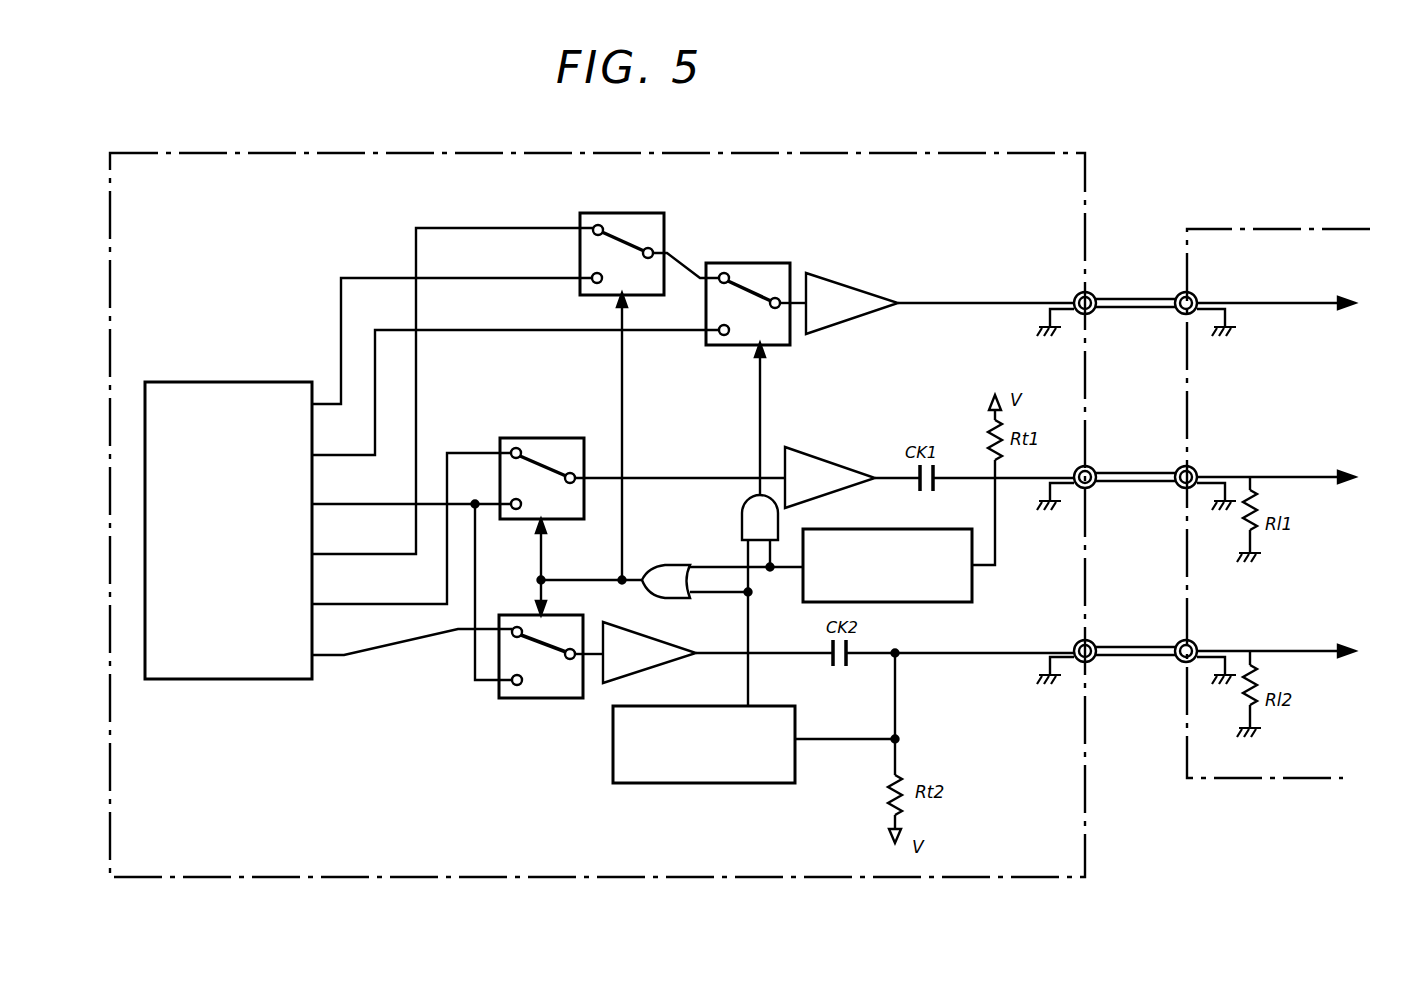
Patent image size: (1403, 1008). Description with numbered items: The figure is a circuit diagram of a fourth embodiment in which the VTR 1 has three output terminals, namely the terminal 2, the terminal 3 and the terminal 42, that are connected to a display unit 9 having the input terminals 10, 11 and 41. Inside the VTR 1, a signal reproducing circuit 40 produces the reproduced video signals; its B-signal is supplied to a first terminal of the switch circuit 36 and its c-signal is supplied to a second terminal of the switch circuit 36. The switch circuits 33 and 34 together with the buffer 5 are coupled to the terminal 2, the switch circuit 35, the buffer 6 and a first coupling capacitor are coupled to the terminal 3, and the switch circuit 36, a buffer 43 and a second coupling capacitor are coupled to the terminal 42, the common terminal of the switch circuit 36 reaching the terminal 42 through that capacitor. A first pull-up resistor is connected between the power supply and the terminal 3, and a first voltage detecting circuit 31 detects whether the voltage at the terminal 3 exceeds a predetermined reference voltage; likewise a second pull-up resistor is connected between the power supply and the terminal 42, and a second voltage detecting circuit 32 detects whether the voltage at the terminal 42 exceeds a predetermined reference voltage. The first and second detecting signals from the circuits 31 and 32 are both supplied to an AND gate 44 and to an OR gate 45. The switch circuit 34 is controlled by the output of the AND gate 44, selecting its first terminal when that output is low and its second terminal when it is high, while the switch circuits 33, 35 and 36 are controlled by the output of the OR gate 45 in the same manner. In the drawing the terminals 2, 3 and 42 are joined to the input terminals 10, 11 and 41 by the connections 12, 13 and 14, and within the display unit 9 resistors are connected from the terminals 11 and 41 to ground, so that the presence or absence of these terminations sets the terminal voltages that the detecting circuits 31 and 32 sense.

The VTR 1 is at (712, 152).
The terminal 2 is at (1093, 292).
The terminal 3 is at (1093, 466).
The buffer 5 is at (833, 279).
The buffer 6 is at (817, 448).
The display unit 9 is at (1278, 483).
The input terminal 10 is at (1178, 292).
The input terminal 11 is at (1178, 466).
The connecting cable 12 is at (1136, 309).
The connecting cable 13 is at (1138, 483).
The connecting cable 14 is at (1132, 657).
The first voltage detecting circuit 31 is at (935, 602).
The second voltage detecting circuit 32 is at (768, 706).
The switch circuit 33 is at (603, 213).
The switch circuit 34 is at (730, 263).
The switch circuit 35 is at (520, 438).
The switch circuit 36 is at (523, 698).
The signal reproducing circuit 40 is at (232, 382).
The input terminal 41 is at (1178, 641).
The terminal 42 is at (1093, 640).
The buffer 43 is at (665, 640).
The AND gate 44 is at (743, 512).
The OR gate 45 is at (668, 562).